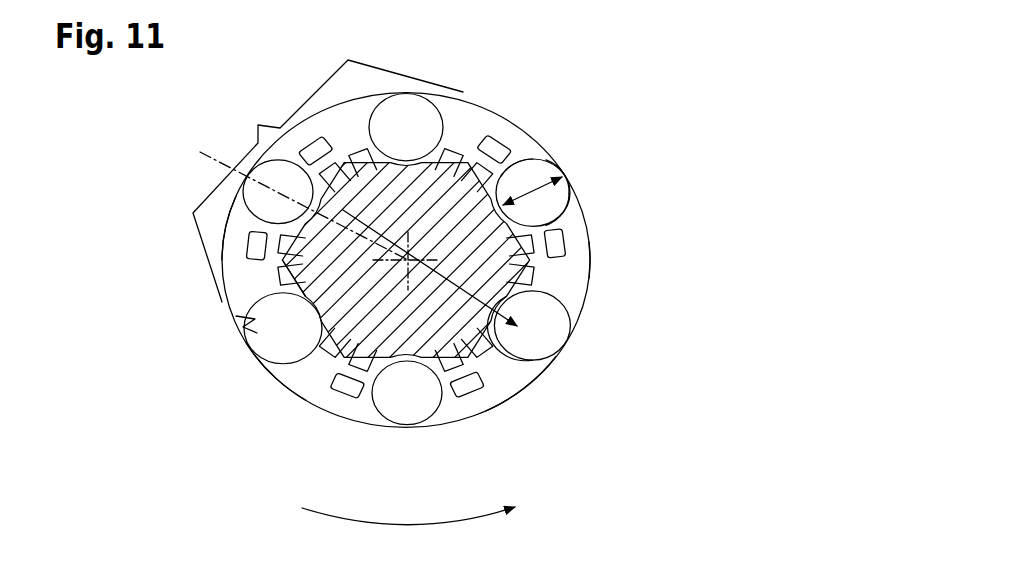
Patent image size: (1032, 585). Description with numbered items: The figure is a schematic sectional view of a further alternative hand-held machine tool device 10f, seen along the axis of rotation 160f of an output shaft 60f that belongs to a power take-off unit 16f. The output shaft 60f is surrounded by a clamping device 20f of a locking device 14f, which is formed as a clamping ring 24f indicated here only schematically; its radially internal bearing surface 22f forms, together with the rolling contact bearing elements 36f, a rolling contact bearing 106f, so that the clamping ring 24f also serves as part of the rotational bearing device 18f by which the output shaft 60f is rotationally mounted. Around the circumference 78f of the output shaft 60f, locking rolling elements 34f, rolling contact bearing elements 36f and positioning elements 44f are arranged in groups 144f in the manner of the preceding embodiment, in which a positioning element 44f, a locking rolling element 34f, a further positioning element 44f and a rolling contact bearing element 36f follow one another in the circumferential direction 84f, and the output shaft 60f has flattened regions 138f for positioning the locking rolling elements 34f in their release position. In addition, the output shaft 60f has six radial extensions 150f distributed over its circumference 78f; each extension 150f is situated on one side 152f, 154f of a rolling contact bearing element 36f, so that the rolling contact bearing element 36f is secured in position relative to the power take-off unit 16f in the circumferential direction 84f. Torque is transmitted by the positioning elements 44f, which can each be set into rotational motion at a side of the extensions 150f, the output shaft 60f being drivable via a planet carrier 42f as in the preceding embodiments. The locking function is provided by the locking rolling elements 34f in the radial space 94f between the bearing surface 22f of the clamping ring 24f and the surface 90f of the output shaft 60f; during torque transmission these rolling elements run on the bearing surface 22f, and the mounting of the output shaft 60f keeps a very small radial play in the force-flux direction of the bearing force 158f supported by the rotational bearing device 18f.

The hand-held machine tool device 10f is at (641, 86).
The locking device 14f is at (520, 150).
The power take-off unit 16f is at (430, 230).
The rotational bearing device 18f is at (325, 414).
The clamping device 20f is at (533, 438).
The bearing surface 22f is at (242, 330).
The clamping ring 24f is at (522, 395).
The locking rolling elements 34f is at (530, 168).
The rolling contact bearing elements 36f is at (540, 338).
The planet carrier 42f is at (570, 203).
The positioning elements 44f is at (552, 247).
The output shaft 60f is at (300, 272).
The circumference 78f is at (300, 242).
The circumferential direction 84f is at (410, 523).
The surface of output shaft 90f is at (552, 218).
The radial space 94f is at (545, 163).
The rolling contact bearing 106f is at (283, 399).
The flattened regions 138f is at (248, 217).
The groups 144f is at (328, 181).
The radial extensions 150f is at (457, 153).
The side 152f is at (578, 273).
The side 154f is at (540, 376).
The bearing force 158f is at (488, 304).
The axis of rotation 160f is at (293, 216).